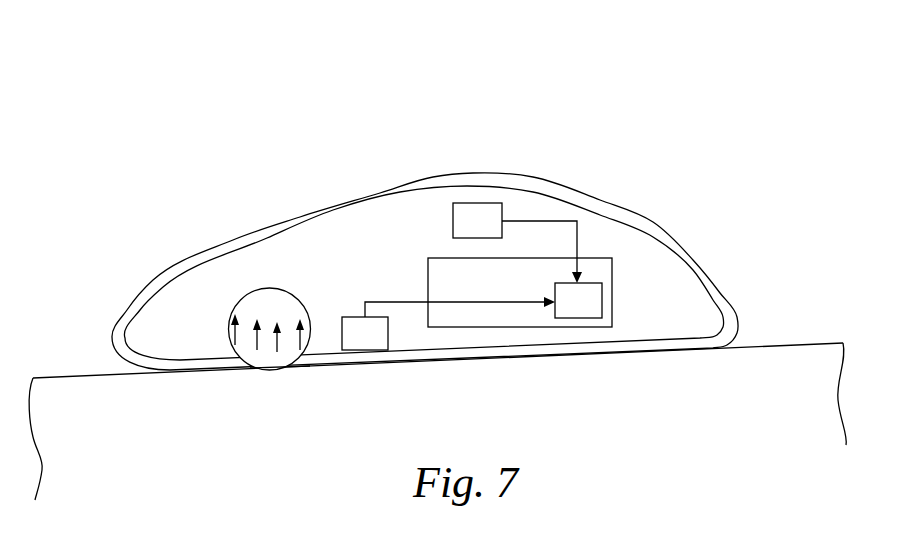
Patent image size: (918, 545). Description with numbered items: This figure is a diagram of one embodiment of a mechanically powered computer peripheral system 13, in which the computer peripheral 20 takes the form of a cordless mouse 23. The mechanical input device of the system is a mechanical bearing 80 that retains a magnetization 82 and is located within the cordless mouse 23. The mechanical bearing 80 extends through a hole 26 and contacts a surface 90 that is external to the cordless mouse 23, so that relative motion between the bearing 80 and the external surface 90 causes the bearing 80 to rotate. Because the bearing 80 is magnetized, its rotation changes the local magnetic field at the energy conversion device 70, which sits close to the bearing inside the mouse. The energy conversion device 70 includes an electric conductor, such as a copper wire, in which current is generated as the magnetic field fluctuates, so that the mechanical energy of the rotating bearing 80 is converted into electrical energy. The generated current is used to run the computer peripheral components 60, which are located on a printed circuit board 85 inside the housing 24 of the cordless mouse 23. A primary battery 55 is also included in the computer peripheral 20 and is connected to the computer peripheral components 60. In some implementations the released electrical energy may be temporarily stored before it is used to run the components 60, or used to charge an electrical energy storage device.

The mechanically powered computer peripheral system 13 is at (799, 74).
The computer peripheral 20 is at (790, 281).
The cordless mouse 23 is at (425, 254).
The housing 24 is at (655, 222).
The hole 26 is at (290, 376).
The primary battery 55 is at (465, 233).
The computer peripheral component 60 is at (566, 313).
The energy conversion device 70 is at (353, 347).
The mechanical bearing 80 is at (299, 293).
The magnetization 82 is at (228, 337).
The printed circuit board 85 is at (515, 287).
The surface 90 is at (52, 378).